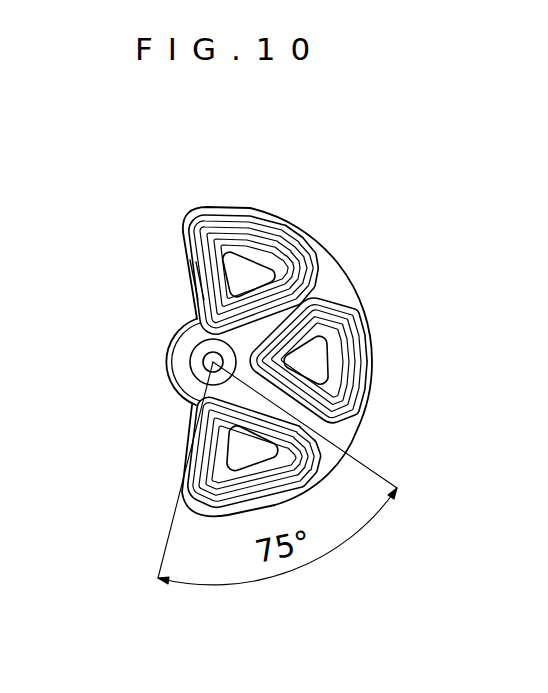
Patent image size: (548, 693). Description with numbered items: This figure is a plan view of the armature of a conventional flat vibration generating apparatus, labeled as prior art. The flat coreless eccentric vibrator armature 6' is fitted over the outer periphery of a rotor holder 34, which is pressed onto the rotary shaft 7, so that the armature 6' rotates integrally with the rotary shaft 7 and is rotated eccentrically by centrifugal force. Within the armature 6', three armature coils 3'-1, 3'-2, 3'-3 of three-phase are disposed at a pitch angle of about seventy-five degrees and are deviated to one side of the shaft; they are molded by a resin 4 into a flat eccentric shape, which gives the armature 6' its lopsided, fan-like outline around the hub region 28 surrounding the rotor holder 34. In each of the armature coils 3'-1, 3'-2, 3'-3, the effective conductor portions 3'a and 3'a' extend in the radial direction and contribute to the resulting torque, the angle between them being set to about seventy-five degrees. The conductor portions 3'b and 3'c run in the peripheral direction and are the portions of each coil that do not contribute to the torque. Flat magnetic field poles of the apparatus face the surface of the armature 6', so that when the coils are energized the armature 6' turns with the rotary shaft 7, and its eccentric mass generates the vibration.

The flat coreless eccentric vibrator armature 6' is at (302, 341).
The armature coil 3'-1 is at (214, 234).
The armature coil 3'-2 is at (369, 343).
The armature coil 3'-3 is at (288, 453).
The conductor portion in the peripheral direction 3'c is at (253, 231).
The effective conductor portion 3'a' is at (166, 247).
The effective conductor portion 3'a is at (132, 268).
The conductor portion in the peripheral direction 3'b is at (134, 283).
The rotary shaft 7 is at (205, 358).
The rotor holder 34 is at (190, 363).
The hub 28 is at (168, 387).
The resin 4 is at (192, 392).